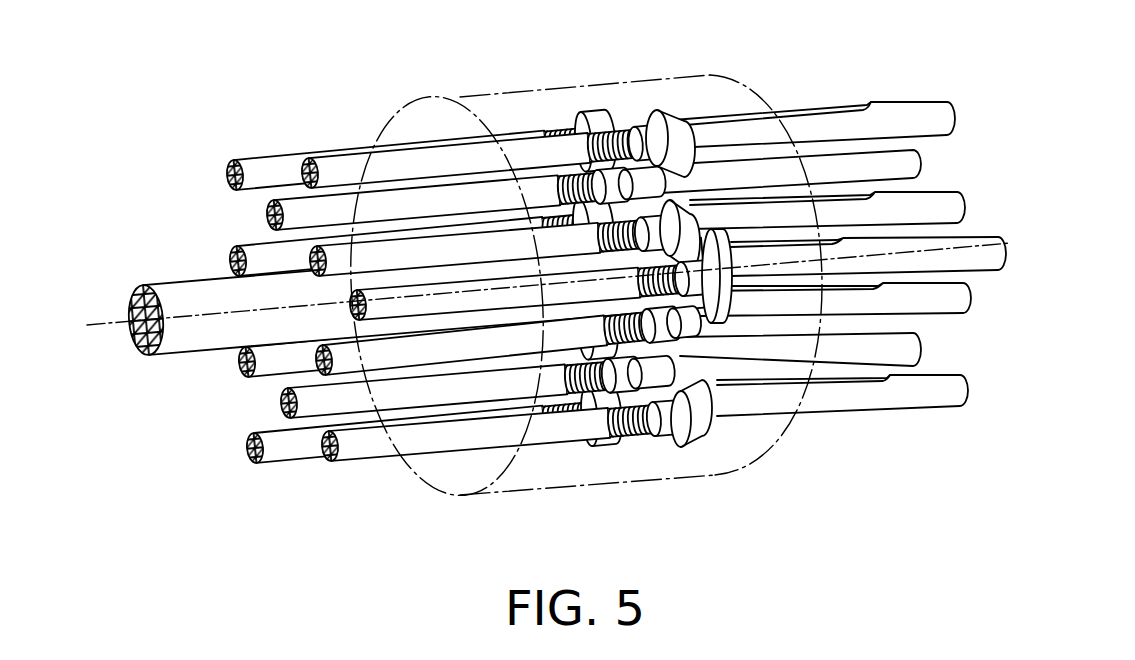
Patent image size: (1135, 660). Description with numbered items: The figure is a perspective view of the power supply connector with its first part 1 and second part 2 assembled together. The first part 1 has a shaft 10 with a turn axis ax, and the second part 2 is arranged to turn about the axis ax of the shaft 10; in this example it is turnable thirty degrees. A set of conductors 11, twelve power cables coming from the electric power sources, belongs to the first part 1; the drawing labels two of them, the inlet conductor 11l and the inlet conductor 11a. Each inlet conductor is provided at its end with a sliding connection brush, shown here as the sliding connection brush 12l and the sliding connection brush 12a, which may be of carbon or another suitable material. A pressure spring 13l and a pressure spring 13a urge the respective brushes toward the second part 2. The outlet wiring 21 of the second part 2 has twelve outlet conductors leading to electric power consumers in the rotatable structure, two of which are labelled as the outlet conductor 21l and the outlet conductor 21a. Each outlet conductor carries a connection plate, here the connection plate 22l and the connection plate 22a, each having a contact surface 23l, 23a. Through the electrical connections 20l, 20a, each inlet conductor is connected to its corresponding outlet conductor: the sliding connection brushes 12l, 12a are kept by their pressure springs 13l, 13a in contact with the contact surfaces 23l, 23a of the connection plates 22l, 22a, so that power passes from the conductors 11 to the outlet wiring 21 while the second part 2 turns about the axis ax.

The first part 1 is at (260, 113).
The second part 2 is at (836, 467).
The shaft 10 is at (190, 280).
The conductors 11 is at (269, 500).
The inlet conductor 11l is at (347, 170).
The inlet conductor 11a is at (370, 440).
The sliding connection brush 12l is at (640, 118).
The sliding connection brush 12a is at (665, 417).
The pressure spring 13l is at (578, 125).
The pressure spring 13a is at (625, 430).
The electrical connection 20l is at (676, 92).
The electrical connection 20a is at (668, 462).
The outlet wiring 21 is at (866, 72).
The outlet conductor 21l is at (822, 132).
The outlet conductor 21a is at (887, 395).
The connection plate 22l is at (700, 148).
The connection plate 22a is at (697, 407).
The contact surface 23l is at (690, 125).
The contact surface 23a is at (697, 400).
The turn axis ax is at (125, 321).